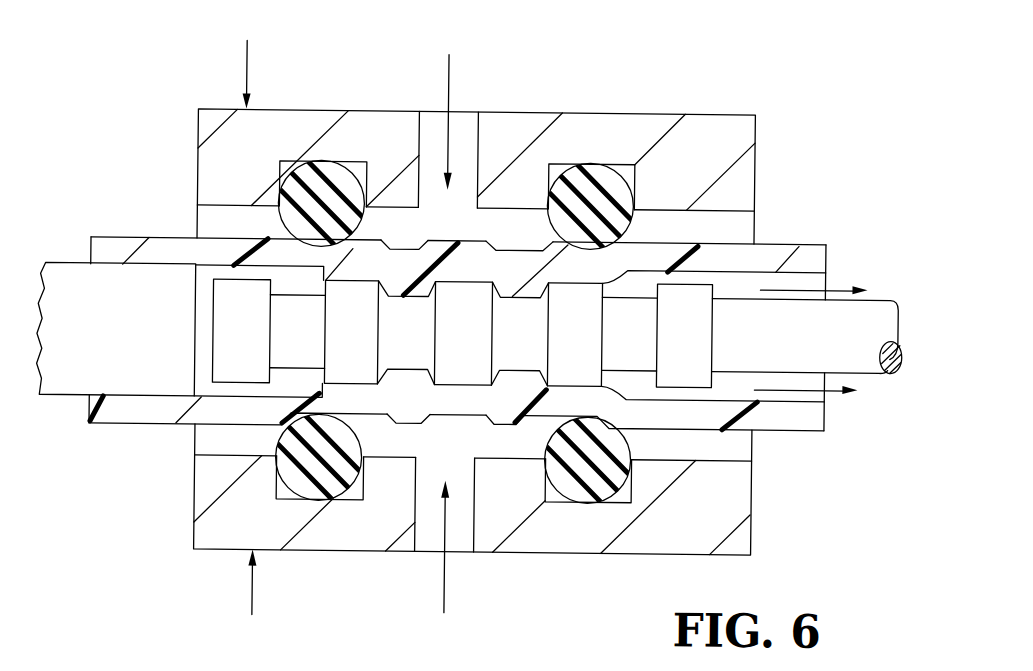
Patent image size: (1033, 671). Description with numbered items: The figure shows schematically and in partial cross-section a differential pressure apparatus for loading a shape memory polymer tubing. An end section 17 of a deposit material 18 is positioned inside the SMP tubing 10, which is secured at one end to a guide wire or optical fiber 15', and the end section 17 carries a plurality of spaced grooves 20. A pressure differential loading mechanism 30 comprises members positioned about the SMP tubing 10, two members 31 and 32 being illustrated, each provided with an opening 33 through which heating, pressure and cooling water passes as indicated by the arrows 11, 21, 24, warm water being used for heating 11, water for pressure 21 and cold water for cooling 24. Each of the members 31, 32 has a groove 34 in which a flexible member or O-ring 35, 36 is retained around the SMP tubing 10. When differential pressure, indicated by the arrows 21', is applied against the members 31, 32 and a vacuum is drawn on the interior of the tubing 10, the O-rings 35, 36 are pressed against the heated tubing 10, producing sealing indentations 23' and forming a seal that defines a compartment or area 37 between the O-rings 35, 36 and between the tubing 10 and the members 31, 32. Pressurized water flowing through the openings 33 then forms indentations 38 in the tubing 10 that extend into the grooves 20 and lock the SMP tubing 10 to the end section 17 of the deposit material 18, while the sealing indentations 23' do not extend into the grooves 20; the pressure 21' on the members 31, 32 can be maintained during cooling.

The SMP tubing 10 is at (113, 232).
The heating arrow 11 is at (511, 344).
The guide wire or optical fiber 15' is at (153, 329).
The end section 17 is at (472, 350).
The deposit material 18 is at (897, 325).
The grooves 20 is at (297, 370).
The pressure arrow 21 is at (511, 344).
The differential pressure arrows 21' is at (218, 326).
The sealing indentations 23' is at (424, 332).
The cooling arrow 24 is at (511, 344).
The pressure differential loading mechanism 30 is at (172, 96).
The member 31 is at (196, 163).
The member 32 is at (197, 495).
The openings 33 is at (432, 123).
The groove 34 is at (373, 172).
The O-ring 35 is at (312, 177).
The O-ring 36 is at (597, 193).
The compartment or area 37 is at (397, 233).
The indentations 38 is at (513, 246).